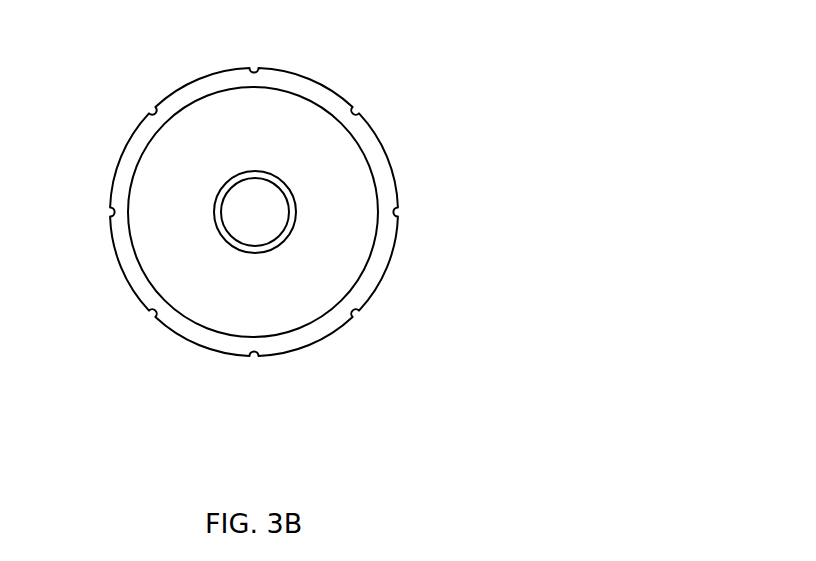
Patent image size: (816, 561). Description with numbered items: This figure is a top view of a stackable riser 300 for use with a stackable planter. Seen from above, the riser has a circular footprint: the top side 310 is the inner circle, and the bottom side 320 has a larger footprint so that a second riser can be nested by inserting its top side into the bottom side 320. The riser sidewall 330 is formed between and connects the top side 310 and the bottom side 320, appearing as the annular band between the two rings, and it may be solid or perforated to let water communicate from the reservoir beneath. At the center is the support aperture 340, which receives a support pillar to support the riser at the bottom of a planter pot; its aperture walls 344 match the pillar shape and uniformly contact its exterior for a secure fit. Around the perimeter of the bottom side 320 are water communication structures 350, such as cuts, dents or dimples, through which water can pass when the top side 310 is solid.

The stackable riser 300 is at (401, 57).
The top side 310 is at (143, 157).
The bottom side 320 is at (167, 328).
The riser sidewall 330 is at (390, 228).
The support aperture 340 is at (262, 202).
The aperture walls 344 is at (246, 225).
The water communication structures 350 is at (372, 316).